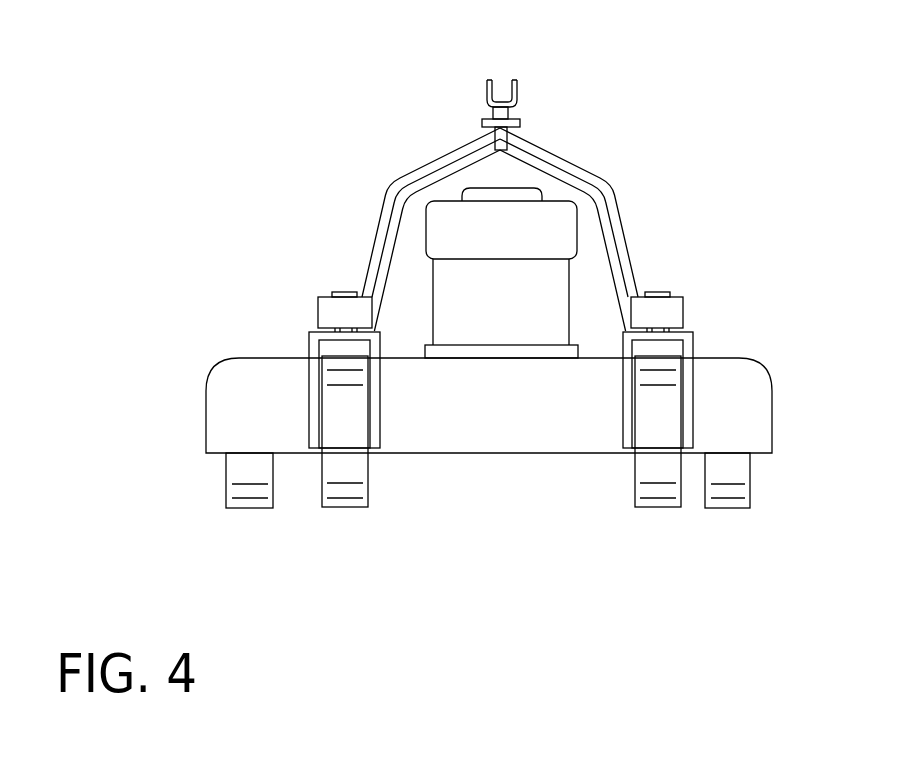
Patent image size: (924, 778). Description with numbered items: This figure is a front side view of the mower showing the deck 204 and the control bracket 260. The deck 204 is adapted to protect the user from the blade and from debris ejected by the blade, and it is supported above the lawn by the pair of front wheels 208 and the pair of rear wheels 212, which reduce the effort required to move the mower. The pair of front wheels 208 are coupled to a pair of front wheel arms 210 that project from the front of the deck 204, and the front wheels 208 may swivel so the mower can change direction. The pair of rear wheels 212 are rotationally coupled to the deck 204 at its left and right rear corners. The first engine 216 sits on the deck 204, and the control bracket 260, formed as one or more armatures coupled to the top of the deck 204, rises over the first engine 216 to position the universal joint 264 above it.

The deck 204 is at (755, 385).
The pair of front wheels 208 is at (337, 495).
The pair of front wheel arms 210 is at (333, 313).
The pair of rear wheels 212 is at (237, 484).
The first engine 216 is at (455, 293).
The control bracket 260 is at (587, 173).
The universal joint 264 is at (518, 92).